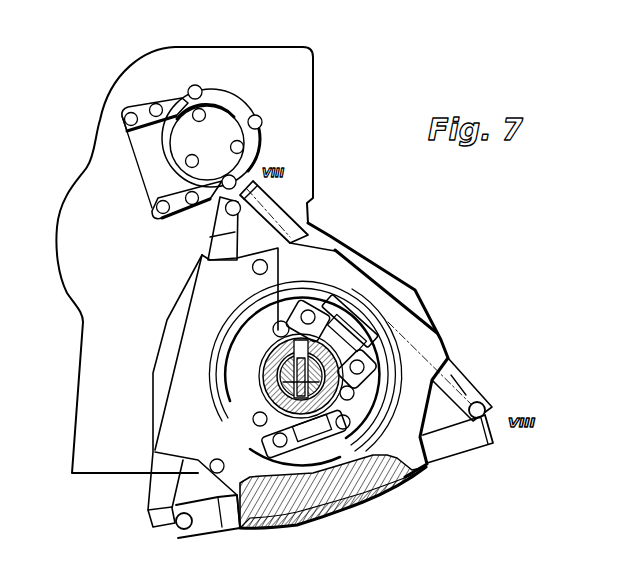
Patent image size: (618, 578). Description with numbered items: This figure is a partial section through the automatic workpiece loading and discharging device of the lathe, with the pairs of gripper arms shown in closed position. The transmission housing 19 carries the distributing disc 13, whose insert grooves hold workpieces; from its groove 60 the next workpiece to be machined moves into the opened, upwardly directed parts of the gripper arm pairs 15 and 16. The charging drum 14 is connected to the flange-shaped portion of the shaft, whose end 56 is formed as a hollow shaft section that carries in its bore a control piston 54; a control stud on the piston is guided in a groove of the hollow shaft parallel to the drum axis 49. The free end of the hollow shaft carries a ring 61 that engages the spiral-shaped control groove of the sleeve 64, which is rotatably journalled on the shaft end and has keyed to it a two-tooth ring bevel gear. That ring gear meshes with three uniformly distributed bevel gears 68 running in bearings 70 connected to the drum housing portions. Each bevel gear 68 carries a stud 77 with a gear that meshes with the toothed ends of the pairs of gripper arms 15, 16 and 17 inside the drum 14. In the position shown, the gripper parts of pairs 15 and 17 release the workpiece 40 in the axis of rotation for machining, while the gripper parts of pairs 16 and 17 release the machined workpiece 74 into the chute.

The transmission housing 19 is at (265, 62).
The distributing disc 13 is at (240, 108).
The groove 60 is at (254, 128).
The pair of gripper arms 15 is at (292, 203).
The workpiece 40 is at (224, 200).
The charging drum 14 is at (180, 402).
The pair of gripper arms 16 is at (162, 490).
The machined workpiece 74 is at (180, 524).
The drum axis 49 is at (385, 375).
The ring 61 is at (273, 337).
The sleeve 64 is at (273, 348).
The hollow shaft section 56 is at (265, 352).
The control piston 54 is at (258, 376).
The bevel gear 68 is at (340, 315).
The stud 77 is at (372, 322).
The bearing 70 is at (400, 480).
The pair of gripper arms 17 is at (442, 447).